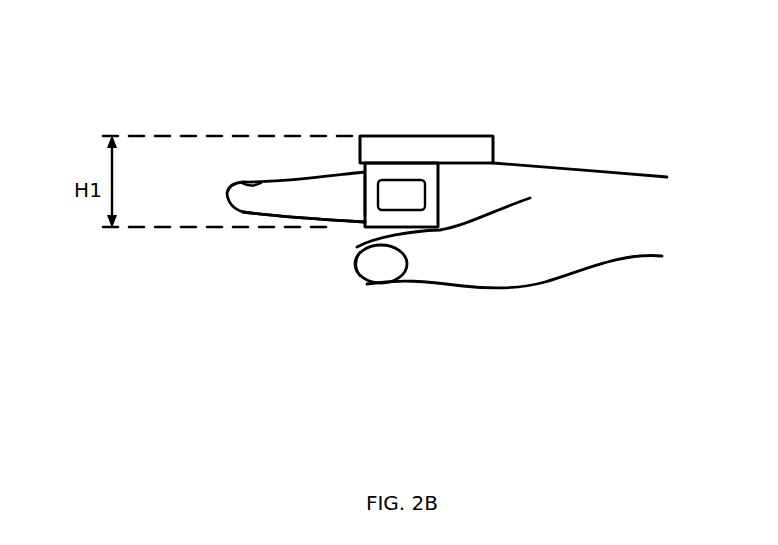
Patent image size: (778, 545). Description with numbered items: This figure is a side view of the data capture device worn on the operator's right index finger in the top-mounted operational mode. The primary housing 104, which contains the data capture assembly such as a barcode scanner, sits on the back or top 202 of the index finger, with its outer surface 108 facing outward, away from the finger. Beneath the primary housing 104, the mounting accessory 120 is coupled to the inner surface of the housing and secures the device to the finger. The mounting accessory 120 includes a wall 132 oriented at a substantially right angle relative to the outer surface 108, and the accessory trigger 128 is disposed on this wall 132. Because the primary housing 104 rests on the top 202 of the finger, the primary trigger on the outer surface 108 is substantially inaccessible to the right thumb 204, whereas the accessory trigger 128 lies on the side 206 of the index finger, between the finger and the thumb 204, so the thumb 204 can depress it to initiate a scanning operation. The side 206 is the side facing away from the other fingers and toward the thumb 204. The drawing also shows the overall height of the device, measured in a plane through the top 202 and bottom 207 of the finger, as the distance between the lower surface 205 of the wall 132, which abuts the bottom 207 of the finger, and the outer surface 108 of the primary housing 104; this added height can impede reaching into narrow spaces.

The primary housing 104 is at (504, 136).
The outer surface 108 is at (448, 136).
The mounting accessory 120 is at (455, 203).
The accessory trigger 128 is at (388, 207).
The wall 132 is at (366, 202).
The top 202 is at (307, 177).
The thumb 204 is at (465, 288).
The lower surface 205 is at (411, 229).
The side 206 is at (278, 193).
The bottom 207 is at (288, 217).